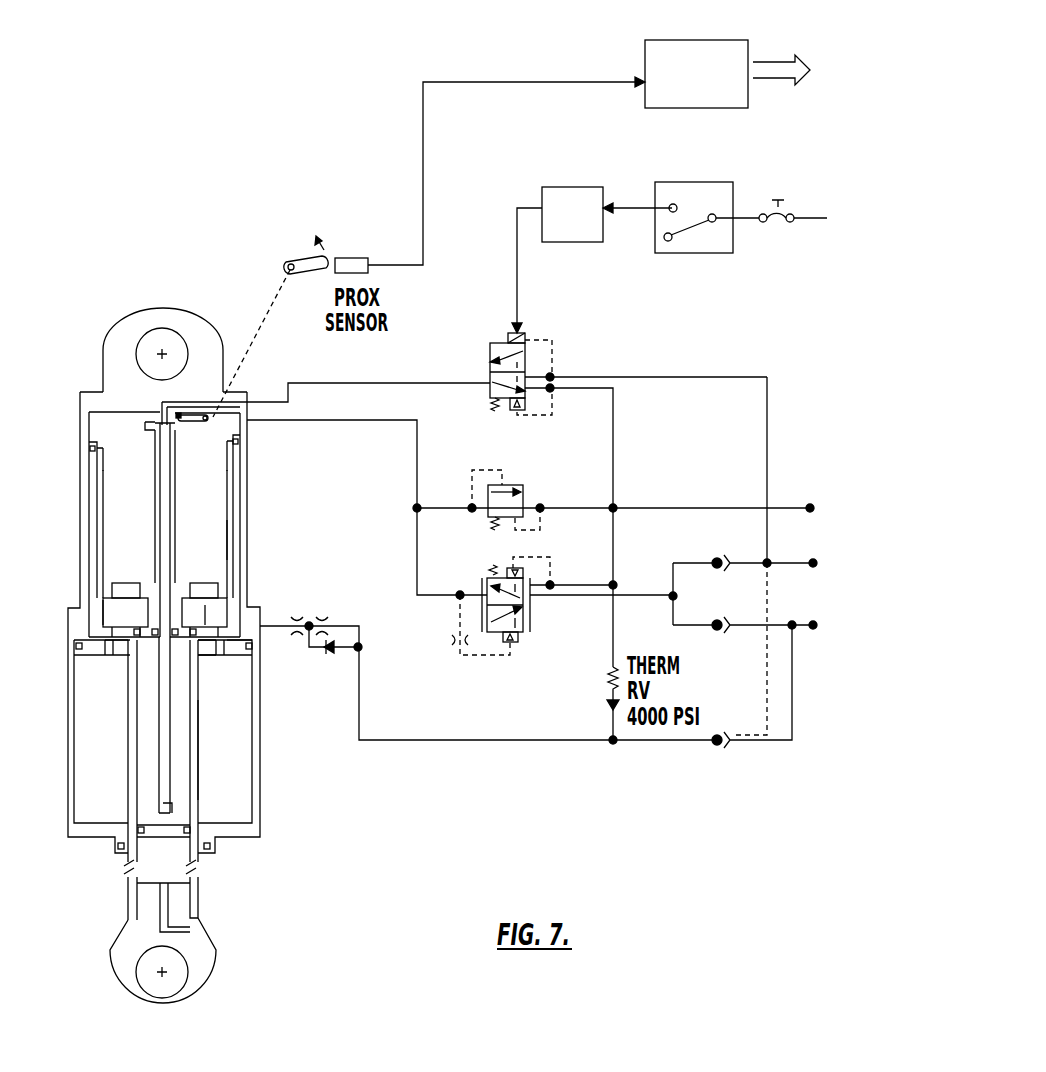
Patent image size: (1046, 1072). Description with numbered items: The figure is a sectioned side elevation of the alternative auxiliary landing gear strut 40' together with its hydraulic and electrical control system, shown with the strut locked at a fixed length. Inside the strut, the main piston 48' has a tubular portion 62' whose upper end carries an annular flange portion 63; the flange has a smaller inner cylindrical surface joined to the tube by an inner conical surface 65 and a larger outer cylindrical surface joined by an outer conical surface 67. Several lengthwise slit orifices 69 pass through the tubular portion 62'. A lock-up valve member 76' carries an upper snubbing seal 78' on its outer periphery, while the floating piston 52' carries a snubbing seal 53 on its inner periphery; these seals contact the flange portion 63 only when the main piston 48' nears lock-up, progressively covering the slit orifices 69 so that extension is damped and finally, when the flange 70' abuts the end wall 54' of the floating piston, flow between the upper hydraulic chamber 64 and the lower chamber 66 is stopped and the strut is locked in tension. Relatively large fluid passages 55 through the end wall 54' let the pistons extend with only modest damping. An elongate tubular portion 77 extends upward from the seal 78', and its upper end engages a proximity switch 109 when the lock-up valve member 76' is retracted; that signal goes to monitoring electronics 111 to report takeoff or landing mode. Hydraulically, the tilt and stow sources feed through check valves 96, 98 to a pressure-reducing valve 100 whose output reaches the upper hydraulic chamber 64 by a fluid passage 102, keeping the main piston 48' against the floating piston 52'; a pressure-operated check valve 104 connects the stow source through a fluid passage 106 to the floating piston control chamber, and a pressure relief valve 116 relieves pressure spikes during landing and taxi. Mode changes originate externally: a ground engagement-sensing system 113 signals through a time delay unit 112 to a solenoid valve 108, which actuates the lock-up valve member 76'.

The strut 40' is at (149, 546).
The main piston 48' is at (196, 943).
The floating piston 52' is at (269, 523).
The snubbing seal 53 is at (218, 578).
The end wall 54' is at (272, 658).
The fluid passages 55 is at (215, 652).
The tubular portion 62' is at (111, 780).
The annular flange portion 63 is at (200, 590).
The upper hydraulic chamber 64 is at (205, 470).
The inner conical surface 65 is at (137, 628).
The chamber 66 is at (237, 783).
The outer conical surface 67 is at (105, 608).
The slit orifices 69 is at (205, 615).
The flange 70' is at (80, 661).
The lock-up valve member 76' is at (200, 777).
The elongate tubular portion 77 is at (152, 448).
The upper snubbing seal 78' is at (129, 563).
The check valve 96 is at (714, 553).
The check valve 98 is at (728, 612).
The pressure-reducing valve 100 is at (478, 562).
The fluid passage 102 is at (290, 425).
The pressure-operated check valve 104 is at (730, 745).
The fluid passage 106 is at (430, 742).
The solenoid valve 108 is at (555, 345).
The proximity switch 109 is at (200, 417).
The monitoring electronics 111 is at (692, 60).
The time delay unit 112 is at (563, 186).
The ground engagement-sensing system 113 is at (725, 200).
The pressure relief valve 116 is at (558, 477).